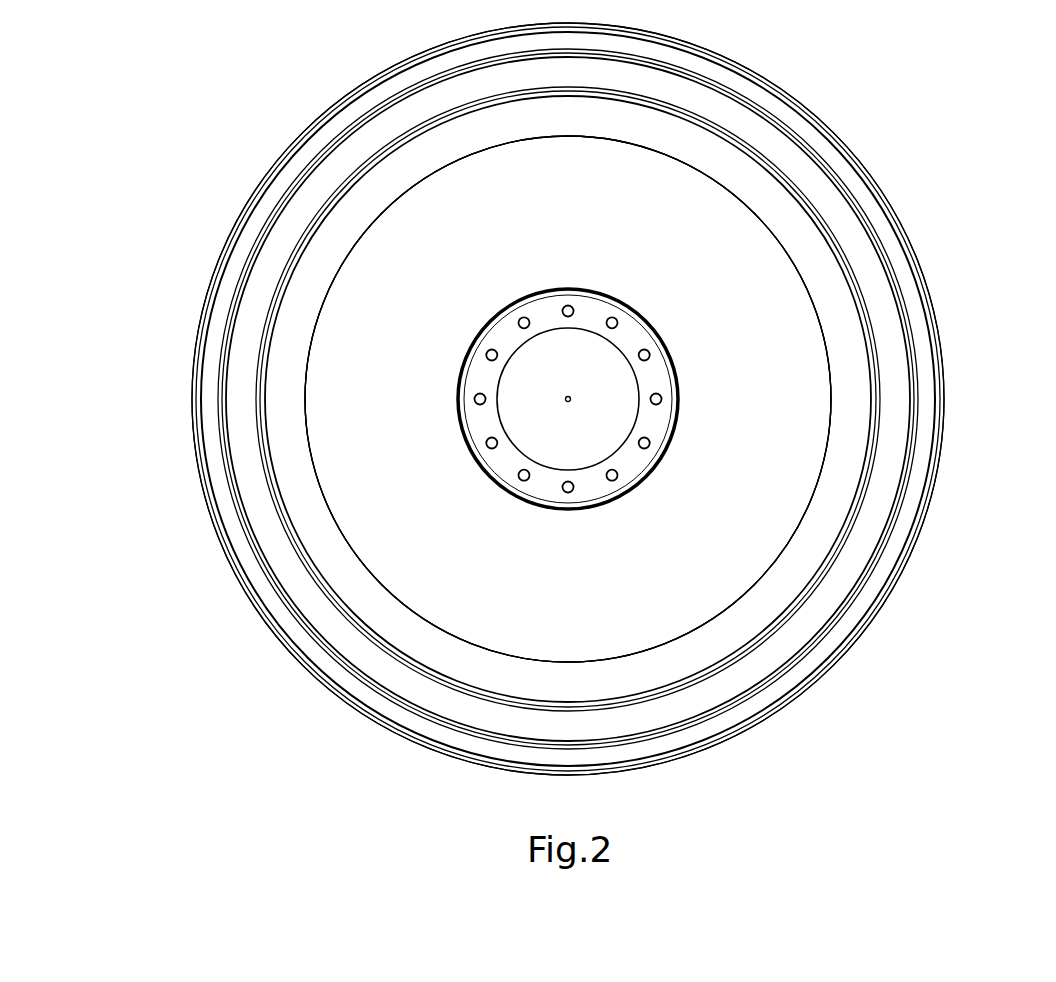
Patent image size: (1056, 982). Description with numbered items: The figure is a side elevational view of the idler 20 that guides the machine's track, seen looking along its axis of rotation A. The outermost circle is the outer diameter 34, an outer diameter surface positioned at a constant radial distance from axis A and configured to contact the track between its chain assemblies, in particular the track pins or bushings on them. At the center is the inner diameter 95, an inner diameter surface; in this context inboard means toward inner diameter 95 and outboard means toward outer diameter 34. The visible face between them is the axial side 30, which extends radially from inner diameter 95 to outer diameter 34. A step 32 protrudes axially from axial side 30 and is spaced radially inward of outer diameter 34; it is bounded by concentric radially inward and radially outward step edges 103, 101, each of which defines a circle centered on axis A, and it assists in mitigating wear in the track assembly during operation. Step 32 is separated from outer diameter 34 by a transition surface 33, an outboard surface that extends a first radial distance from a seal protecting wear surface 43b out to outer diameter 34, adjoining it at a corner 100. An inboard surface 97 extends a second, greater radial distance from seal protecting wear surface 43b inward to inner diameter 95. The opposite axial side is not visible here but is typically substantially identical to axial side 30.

The idler 20 is at (143, 294).
The axial side 30 is at (733, 585).
The step 32 is at (885, 545).
The transition surface 33 is at (913, 485).
The outer diameter 34 is at (956, 383).
The seal protecting wear surface 43b is at (892, 325).
The inner diameter 95 is at (621, 354).
The inboard surface 97 is at (784, 318).
The corner 100 is at (872, 620).
The radially outward step edge 101 is at (732, 708).
The radially inward step edge 103 is at (687, 673).
The axis of rotation A is at (571, 399).